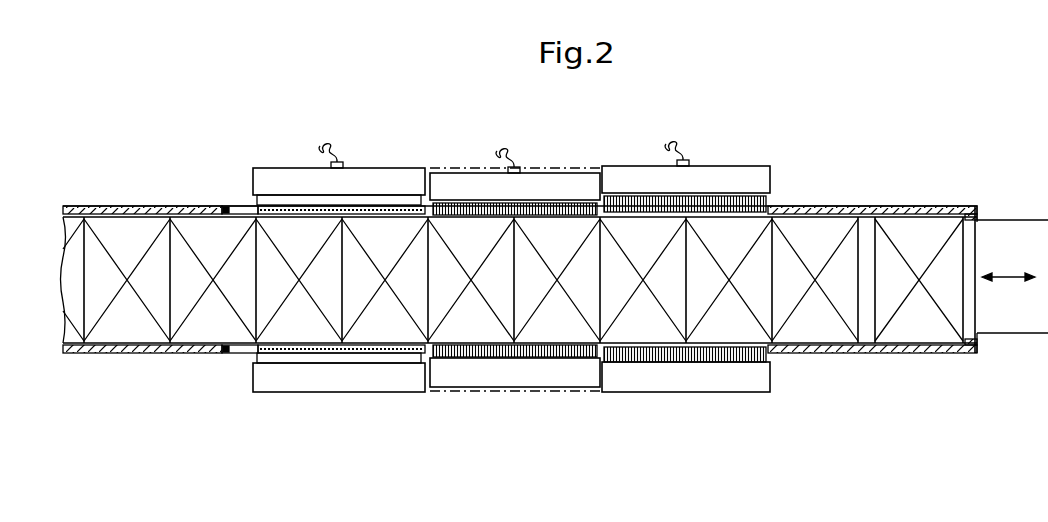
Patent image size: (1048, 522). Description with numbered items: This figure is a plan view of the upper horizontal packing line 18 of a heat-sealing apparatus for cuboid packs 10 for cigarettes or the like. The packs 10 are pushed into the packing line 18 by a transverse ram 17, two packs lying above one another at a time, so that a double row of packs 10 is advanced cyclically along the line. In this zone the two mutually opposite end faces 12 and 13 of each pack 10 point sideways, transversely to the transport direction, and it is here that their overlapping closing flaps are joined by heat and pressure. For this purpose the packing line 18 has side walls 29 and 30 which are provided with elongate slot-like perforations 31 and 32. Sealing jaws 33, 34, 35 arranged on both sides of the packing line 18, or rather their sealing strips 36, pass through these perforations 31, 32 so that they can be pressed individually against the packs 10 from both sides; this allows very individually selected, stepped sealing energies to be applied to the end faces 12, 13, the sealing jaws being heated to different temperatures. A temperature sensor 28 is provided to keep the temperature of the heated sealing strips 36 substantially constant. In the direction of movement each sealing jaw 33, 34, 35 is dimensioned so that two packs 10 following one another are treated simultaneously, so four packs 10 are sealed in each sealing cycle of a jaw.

The pack 10 is at (806, 232).
The end face 12 is at (919, 216).
The end face 13 is at (916, 345).
The transverse ram 17 is at (1016, 325).
The upper horizontal packing line 18 is at (135, 199).
The temperature sensor 28 is at (343, 163).
The side wall 29 is at (160, 353).
The side wall 30 is at (180, 206).
The perforation 31 is at (242, 283).
The perforation 32 is at (239, 206).
The sealing jaw 33 is at (384, 177).
The sealing jaw 34 is at (540, 185).
The sealing jaw 35 is at (633, 180).
The sealing strip 36 is at (460, 212).